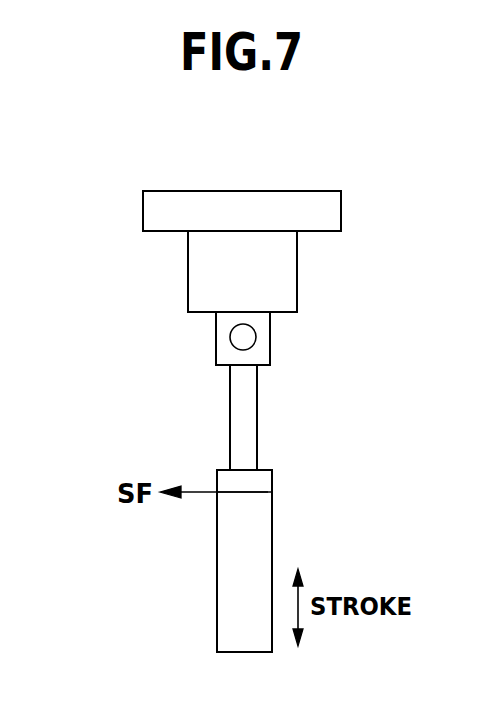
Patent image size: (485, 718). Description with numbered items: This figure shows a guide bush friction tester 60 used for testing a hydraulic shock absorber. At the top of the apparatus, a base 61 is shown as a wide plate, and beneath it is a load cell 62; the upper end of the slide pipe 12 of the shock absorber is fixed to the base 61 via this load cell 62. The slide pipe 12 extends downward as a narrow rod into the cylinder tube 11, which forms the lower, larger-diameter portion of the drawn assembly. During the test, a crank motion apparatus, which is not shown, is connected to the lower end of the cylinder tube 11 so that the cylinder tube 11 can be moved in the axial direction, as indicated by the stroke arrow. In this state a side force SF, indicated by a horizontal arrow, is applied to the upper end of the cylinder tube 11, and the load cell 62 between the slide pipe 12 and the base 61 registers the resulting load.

The guide bush friction tester 60 is at (204, 246).
The base 61 is at (302, 191).
The load cell 62 is at (292, 272).
The slide pipe 12 is at (252, 406).
The cylinder tube 11 is at (267, 512).